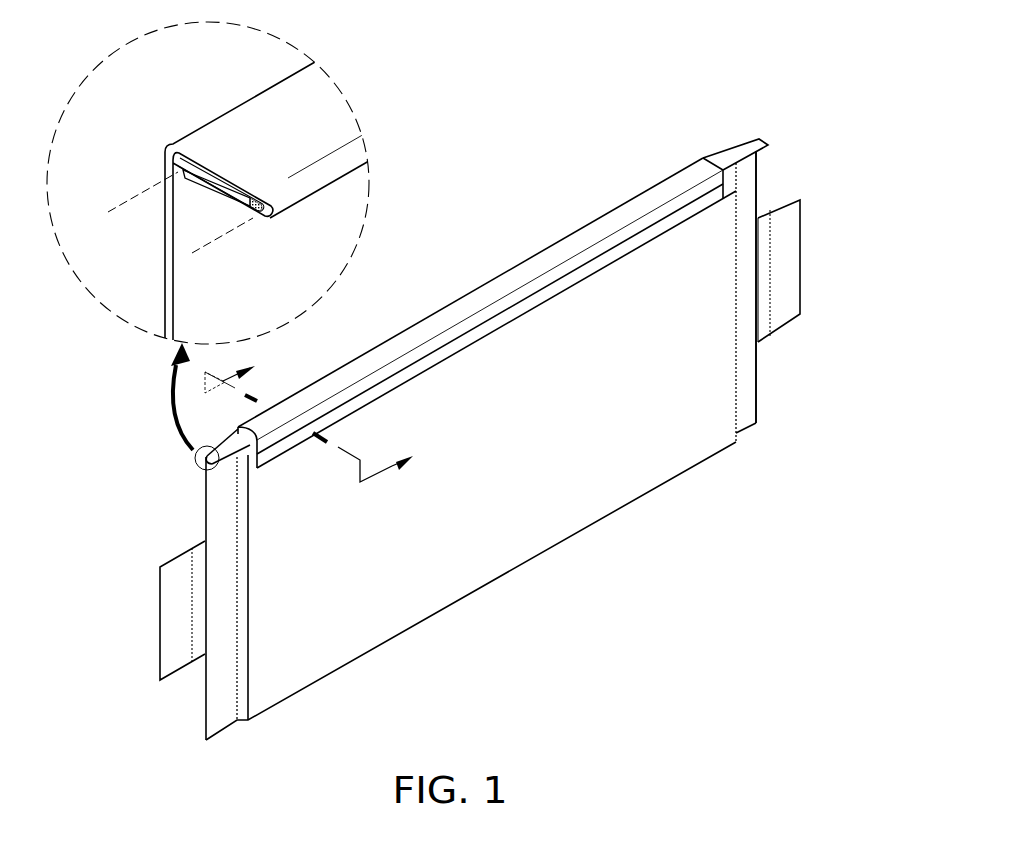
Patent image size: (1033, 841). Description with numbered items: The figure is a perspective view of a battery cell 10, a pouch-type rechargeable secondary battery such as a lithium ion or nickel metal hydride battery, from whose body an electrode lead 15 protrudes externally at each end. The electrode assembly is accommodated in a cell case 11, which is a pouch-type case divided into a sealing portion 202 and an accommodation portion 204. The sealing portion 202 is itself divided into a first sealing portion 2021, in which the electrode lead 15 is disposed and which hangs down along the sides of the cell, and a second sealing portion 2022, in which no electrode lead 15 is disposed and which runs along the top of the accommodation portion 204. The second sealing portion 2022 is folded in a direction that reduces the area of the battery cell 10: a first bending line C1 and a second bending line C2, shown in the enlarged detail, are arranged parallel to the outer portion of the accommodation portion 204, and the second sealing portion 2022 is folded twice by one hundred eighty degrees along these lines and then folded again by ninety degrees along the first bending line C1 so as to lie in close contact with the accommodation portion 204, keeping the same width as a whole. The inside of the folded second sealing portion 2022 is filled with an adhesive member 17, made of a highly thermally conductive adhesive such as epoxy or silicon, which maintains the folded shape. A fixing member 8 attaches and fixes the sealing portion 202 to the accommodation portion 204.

The battery cell 10 is at (449, 117).
The cell case 11 is at (520, 555).
The electrode lead 15 is at (172, 665).
The adhesive member 17 is at (255, 212).
The fixing member 8 is at (607, 220).
The sealing portion 202 is at (663, 38).
The first sealing portion 2021 is at (212, 504).
The second sealing portion 2022 is at (732, 158).
The accommodation portion 204 is at (468, 390).
The first bending line C1 is at (137, 193).
The second bending line C2 is at (217, 240).